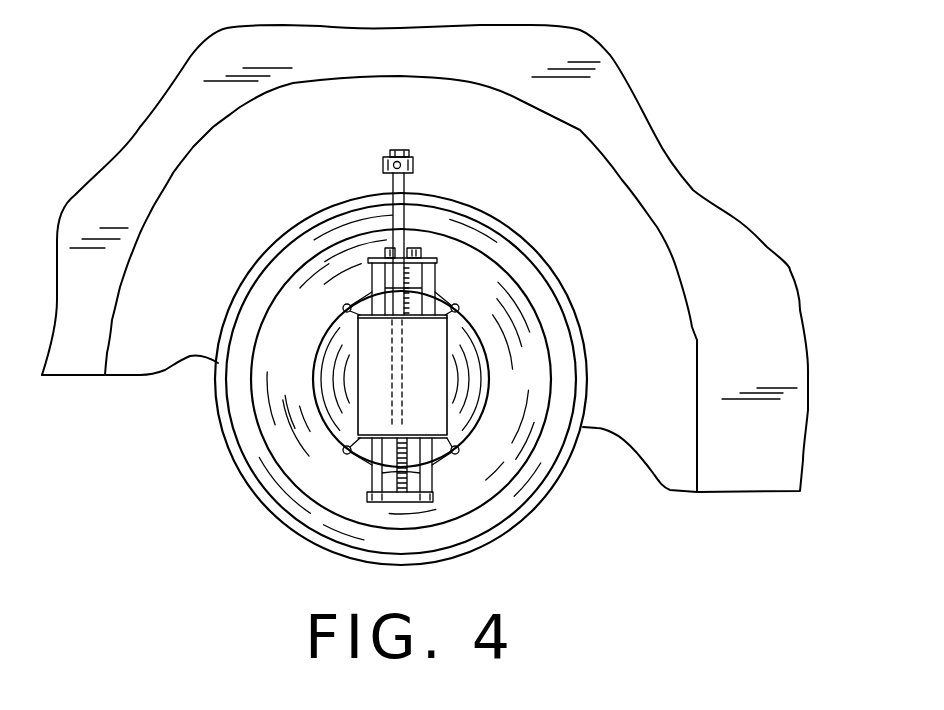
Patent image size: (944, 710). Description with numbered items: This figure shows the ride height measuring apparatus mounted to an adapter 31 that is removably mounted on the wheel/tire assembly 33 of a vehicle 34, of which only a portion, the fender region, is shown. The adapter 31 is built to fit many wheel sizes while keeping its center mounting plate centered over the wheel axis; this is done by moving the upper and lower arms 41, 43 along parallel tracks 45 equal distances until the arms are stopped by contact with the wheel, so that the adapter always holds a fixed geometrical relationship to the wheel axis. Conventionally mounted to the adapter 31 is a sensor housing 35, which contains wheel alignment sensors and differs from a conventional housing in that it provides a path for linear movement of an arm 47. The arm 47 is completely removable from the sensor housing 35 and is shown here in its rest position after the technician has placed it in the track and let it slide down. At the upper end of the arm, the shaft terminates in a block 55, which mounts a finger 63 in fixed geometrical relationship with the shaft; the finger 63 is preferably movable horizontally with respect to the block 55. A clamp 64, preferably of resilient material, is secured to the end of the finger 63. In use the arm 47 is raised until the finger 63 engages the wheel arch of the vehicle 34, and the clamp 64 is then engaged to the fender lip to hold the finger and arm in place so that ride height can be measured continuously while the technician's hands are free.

The adapter 31 is at (455, 290).
The wheel/tire assembly 33 is at (547, 497).
The vehicle 34 is at (410, 65).
The sensor housing 35 is at (437, 388).
The upper arm 41 is at (483, 334).
The lower arm 43 is at (455, 428).
The parallel tracks 45 is at (368, 478).
The arm 47 is at (404, 236).
The block 55 is at (415, 167).
The finger 63 is at (401, 150).
The clamp 64 is at (393, 152).